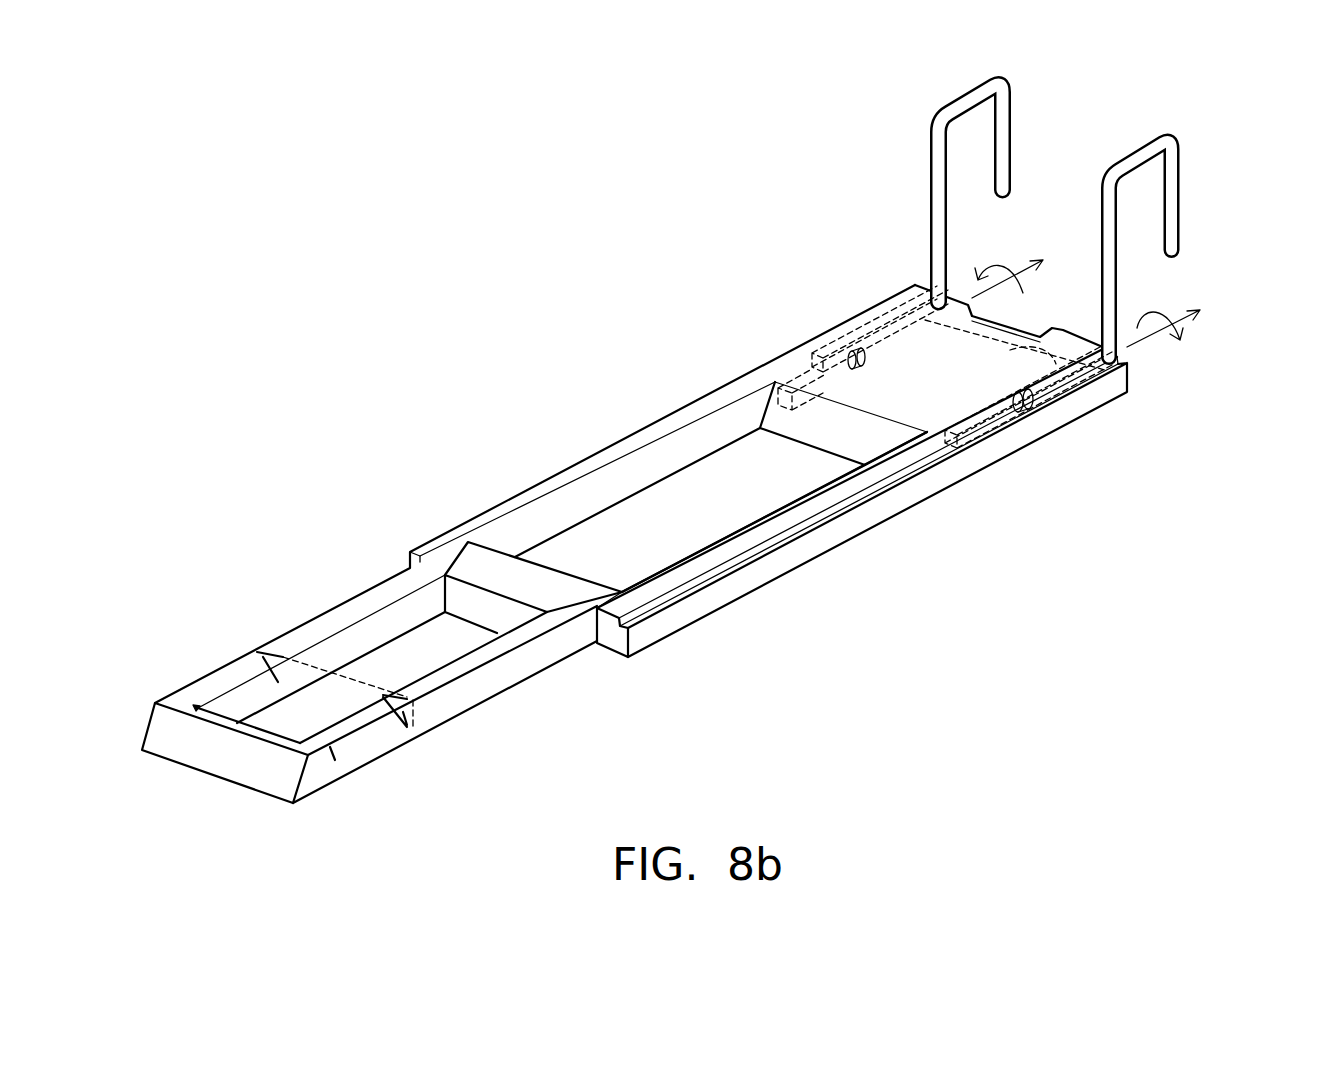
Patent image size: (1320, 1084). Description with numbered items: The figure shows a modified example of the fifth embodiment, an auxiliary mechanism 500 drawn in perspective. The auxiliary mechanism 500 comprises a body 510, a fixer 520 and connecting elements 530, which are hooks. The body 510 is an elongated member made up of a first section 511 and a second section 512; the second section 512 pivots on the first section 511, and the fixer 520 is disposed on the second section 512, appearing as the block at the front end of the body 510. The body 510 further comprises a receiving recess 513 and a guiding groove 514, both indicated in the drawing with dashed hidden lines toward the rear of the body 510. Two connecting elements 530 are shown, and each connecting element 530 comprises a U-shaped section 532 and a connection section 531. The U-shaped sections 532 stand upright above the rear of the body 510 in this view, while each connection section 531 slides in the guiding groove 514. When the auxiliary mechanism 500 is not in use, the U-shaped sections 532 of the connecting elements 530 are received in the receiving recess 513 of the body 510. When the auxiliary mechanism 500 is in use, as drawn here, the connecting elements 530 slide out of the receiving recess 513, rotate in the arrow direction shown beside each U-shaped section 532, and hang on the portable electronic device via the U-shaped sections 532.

The auxiliary mechanism 500 is at (246, 168).
The body 510 is at (1248, 461).
The first section 511 is at (740, 542).
The second section 512 is at (503, 678).
The receiving recess 513 is at (1068, 368).
The guiding groove 514 is at (1019, 395).
The fixer 520 is at (368, 742).
The connecting element 530 is at (766, 93).
The connection section 531 is at (827, 350).
The U-shaped section 532 is at (968, 104).